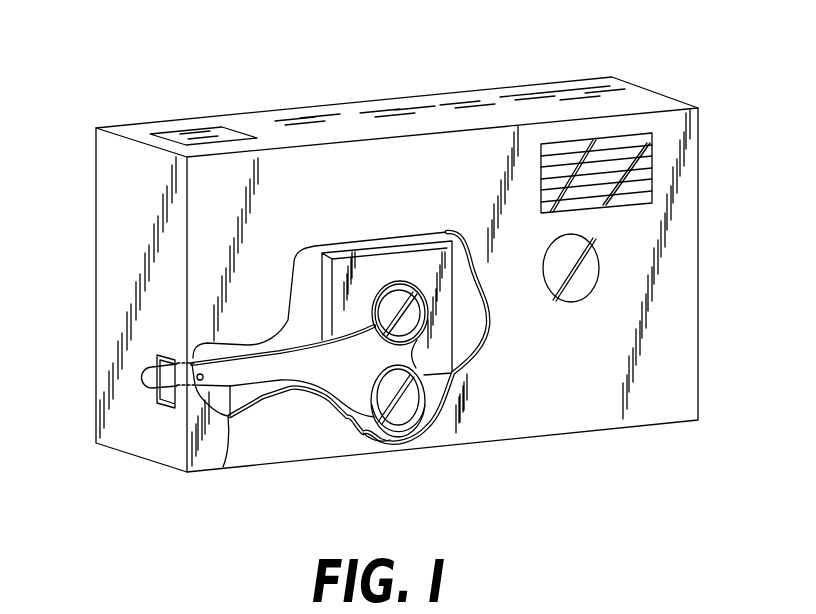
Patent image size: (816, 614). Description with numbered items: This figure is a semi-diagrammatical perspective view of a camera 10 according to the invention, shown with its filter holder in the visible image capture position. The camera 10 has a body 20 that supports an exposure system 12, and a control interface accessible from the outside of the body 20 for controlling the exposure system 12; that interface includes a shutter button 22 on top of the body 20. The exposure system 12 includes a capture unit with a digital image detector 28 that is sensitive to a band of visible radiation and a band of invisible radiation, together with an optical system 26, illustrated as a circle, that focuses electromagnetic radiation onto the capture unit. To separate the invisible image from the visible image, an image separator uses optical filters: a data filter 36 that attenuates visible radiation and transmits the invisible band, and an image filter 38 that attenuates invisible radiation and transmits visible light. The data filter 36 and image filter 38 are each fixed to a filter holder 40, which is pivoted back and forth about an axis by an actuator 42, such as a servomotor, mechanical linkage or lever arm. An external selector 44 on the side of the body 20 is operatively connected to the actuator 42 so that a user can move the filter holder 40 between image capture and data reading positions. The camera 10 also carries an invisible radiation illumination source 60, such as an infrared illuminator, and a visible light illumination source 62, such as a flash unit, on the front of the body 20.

The camera 10 is at (390, 77).
The exposure system 12 is at (457, 318).
The body 20 is at (548, 438).
The shutter button 22 is at (183, 128).
The optical system 26 is at (420, 330).
The digital image detector 28 is at (423, 240).
The data filter 36 is at (395, 415).
The image filter 38 is at (402, 303).
The filter holder 40 is at (370, 423).
The actuator 42 is at (223, 467).
The external selector 44 is at (142, 372).
The invisible radiation illumination source 60 is at (590, 244).
The visible light illumination source 62 is at (633, 142).